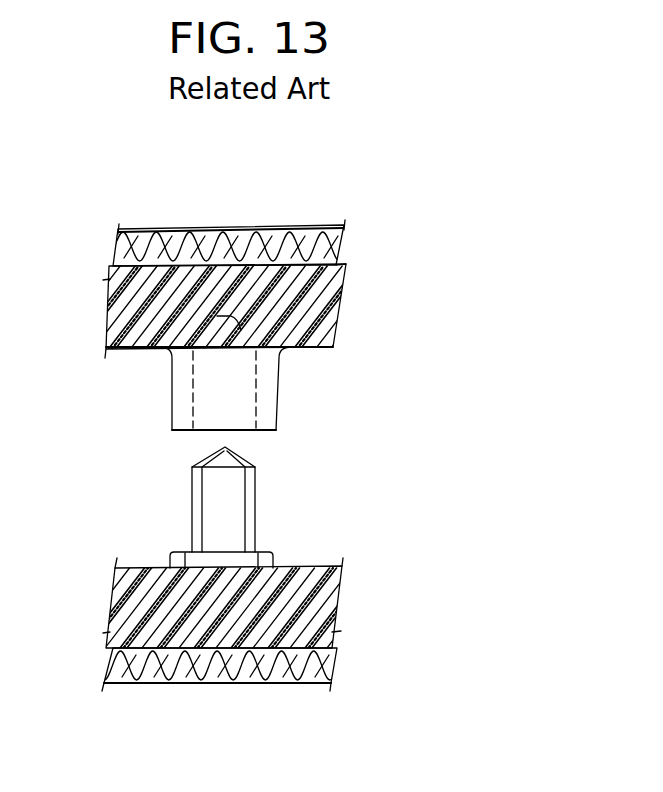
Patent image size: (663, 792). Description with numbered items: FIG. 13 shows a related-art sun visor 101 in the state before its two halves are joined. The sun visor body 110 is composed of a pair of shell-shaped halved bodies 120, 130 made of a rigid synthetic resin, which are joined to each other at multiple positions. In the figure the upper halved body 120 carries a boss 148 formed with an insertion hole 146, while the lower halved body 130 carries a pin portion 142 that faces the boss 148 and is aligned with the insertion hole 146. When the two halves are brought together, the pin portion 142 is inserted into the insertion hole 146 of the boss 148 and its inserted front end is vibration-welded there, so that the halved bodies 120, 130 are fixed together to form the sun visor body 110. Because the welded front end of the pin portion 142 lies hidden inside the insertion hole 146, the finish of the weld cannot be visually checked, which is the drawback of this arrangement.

The sun visor 101 is at (338, 178).
The sun visor body 110 is at (367, 231).
The halved body 120 is at (312, 348).
The insertion hole 146 is at (242, 390).
The boss 148 is at (170, 400).
The halved body 130 is at (133, 567).
The pin portion 142 is at (192, 504).